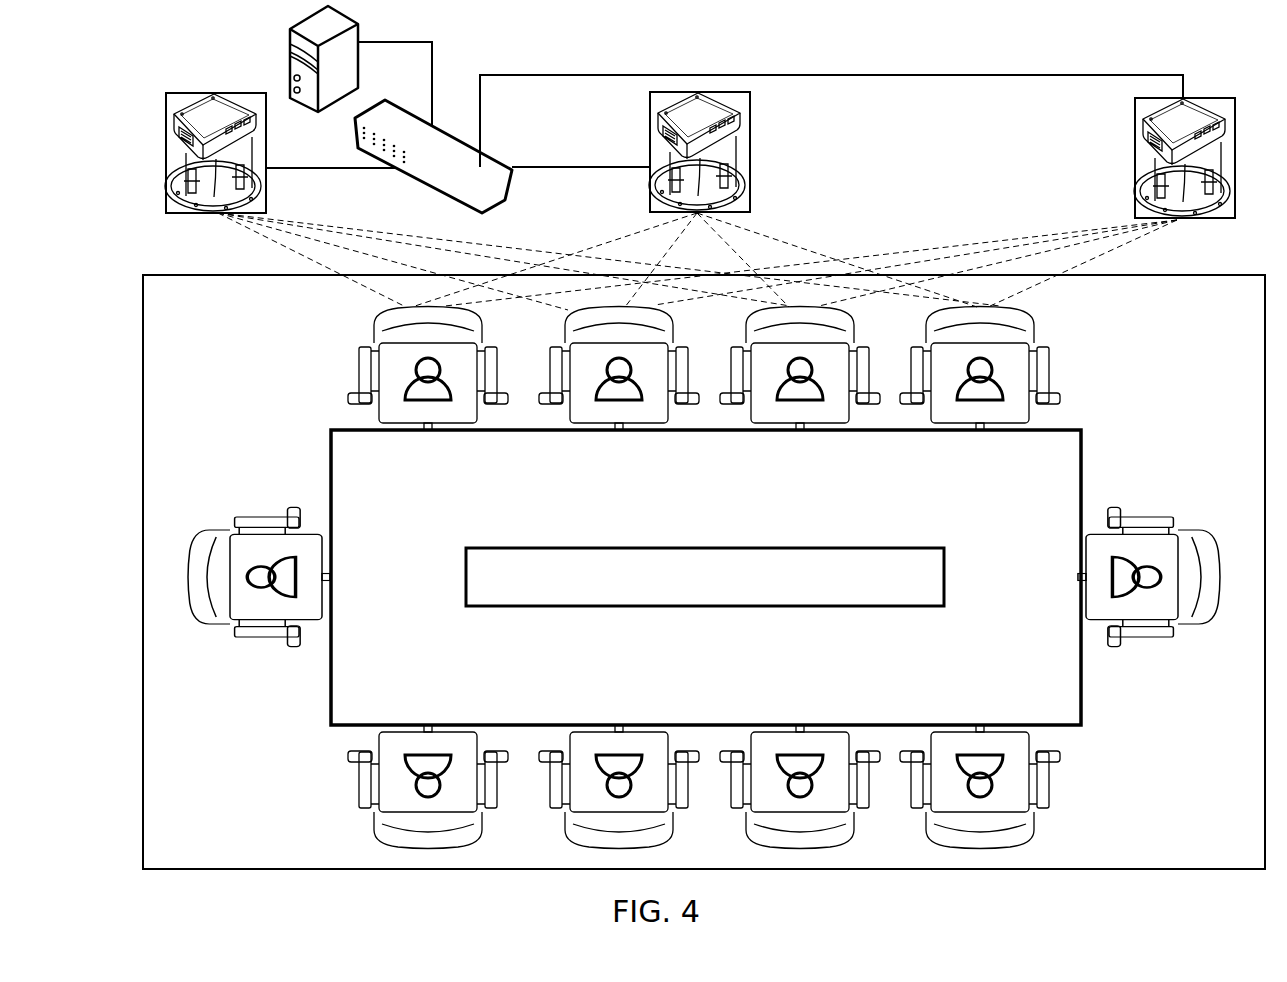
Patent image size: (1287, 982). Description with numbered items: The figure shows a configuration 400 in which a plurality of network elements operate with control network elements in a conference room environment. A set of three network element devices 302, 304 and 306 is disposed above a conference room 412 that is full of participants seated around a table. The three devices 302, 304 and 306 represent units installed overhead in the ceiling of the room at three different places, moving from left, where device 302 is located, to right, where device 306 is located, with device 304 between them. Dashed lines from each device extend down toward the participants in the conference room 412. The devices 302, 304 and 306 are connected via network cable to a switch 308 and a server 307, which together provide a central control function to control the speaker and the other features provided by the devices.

The conferencing system 400 is at (668, 437).
The network element device 302 is at (160, 112).
The network element device 304 is at (644, 116).
The network element device 306 is at (1129, 122).
The server 307 is at (282, 62).
The switch 308 is at (352, 149).
The conference room 412 is at (704, 572).